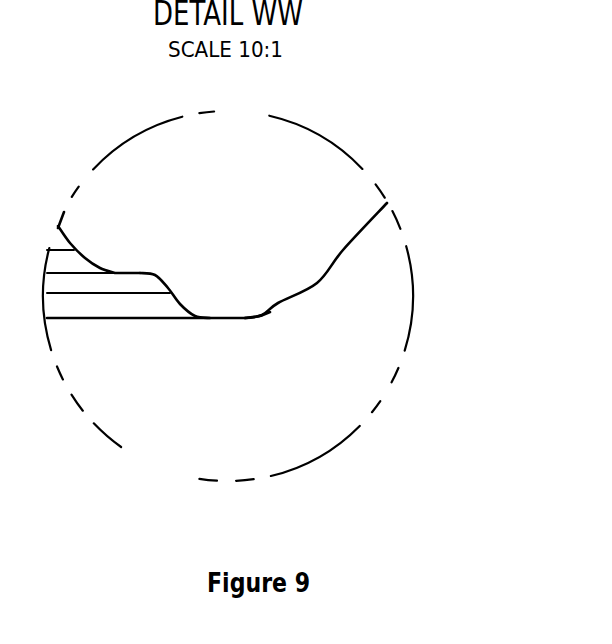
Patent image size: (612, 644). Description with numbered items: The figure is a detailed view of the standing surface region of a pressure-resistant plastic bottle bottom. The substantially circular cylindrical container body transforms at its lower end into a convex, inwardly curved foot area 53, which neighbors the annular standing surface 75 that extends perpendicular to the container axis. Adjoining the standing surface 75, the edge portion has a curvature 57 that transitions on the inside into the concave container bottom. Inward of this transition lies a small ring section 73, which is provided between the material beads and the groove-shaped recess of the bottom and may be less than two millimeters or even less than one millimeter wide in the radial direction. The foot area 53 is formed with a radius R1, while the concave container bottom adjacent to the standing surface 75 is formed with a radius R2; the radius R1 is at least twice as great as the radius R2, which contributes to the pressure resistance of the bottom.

The ring section 73 is at (118, 273).
The curvature 57 is at (247, 315).
The foot area 53 is at (317, 283).
The annular standing surface 75 is at (218, 345).
The radius R1 is at (270, 312).
The radius R2 is at (182, 303).